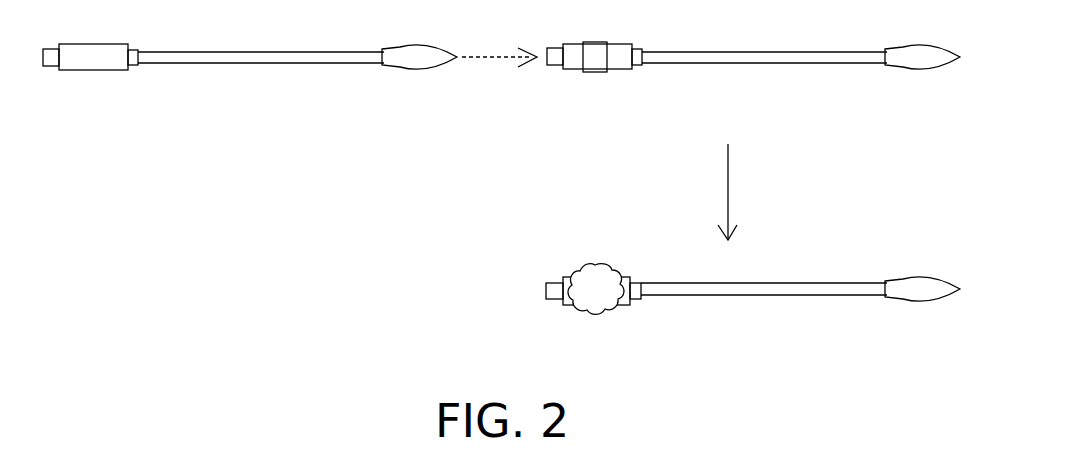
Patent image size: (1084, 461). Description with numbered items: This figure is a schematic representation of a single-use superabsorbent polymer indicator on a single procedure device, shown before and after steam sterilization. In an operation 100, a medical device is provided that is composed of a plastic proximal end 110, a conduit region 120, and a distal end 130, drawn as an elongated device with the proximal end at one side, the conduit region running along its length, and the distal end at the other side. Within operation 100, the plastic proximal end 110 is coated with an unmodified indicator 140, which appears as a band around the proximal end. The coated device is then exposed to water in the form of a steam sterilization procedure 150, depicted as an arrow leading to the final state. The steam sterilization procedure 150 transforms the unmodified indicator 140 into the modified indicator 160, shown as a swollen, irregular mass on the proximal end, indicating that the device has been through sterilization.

The operation 100 is at (261, 291).
The plastic proximal end 110 is at (90, 60).
The conduit region 120 is at (253, 66).
The distal end 130 is at (919, 66).
The unmodified indicator 140 is at (593, 67).
The steam sterilization procedure 150 is at (728, 192).
The modified indicator 160 is at (598, 307).